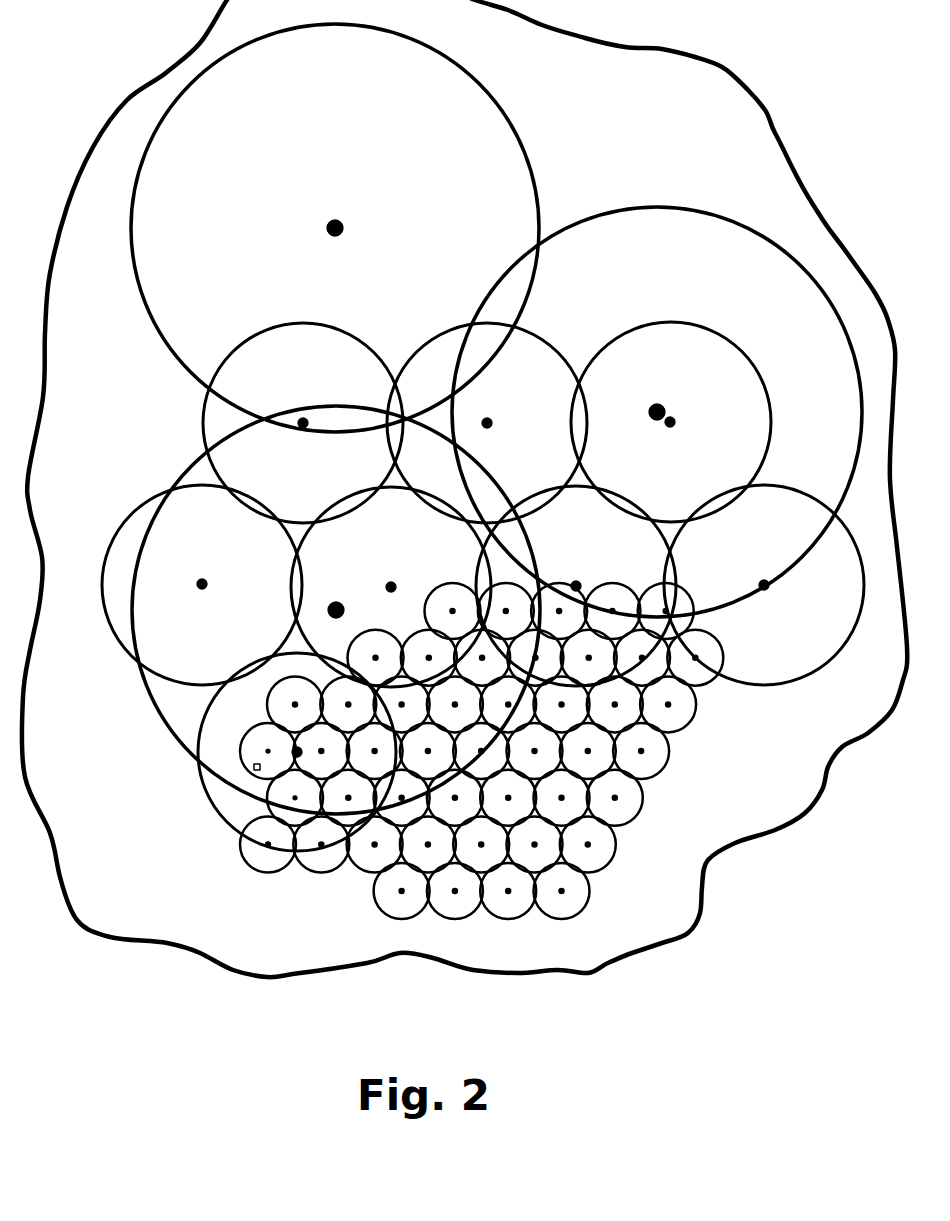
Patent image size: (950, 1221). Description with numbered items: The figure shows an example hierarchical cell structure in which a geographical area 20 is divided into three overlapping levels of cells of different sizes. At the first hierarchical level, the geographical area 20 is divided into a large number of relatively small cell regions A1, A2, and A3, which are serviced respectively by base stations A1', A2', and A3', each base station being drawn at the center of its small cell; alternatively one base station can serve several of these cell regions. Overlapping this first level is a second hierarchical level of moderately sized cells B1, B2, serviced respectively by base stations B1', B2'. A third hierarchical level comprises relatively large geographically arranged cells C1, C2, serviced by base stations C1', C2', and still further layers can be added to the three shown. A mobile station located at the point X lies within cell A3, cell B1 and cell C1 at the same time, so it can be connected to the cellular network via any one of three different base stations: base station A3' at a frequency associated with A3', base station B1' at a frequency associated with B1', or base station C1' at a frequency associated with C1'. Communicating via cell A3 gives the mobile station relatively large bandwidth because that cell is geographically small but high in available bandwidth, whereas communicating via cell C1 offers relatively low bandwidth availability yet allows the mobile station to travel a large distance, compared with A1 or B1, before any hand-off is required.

The geographical area 20 is at (115, 938).
The cell C2 is at (331, 228).
The base station C2' is at (263, 214).
The cell C1 is at (298, 610).
The base station C1' is at (296, 586).
The cell B2 is at (184, 585).
The base station B2' is at (142, 546).
The cell B1 is at (249, 752).
The base station B1' is at (262, 720).
The cell region A3 is at (212, 751).
The base station A3' is at (190, 771).
The point X is at (293, 799).
The cell region A2 is at (239, 813).
The base station A2' is at (208, 870).
The cell region A1 is at (252, 863).
The base station A1' is at (282, 887).